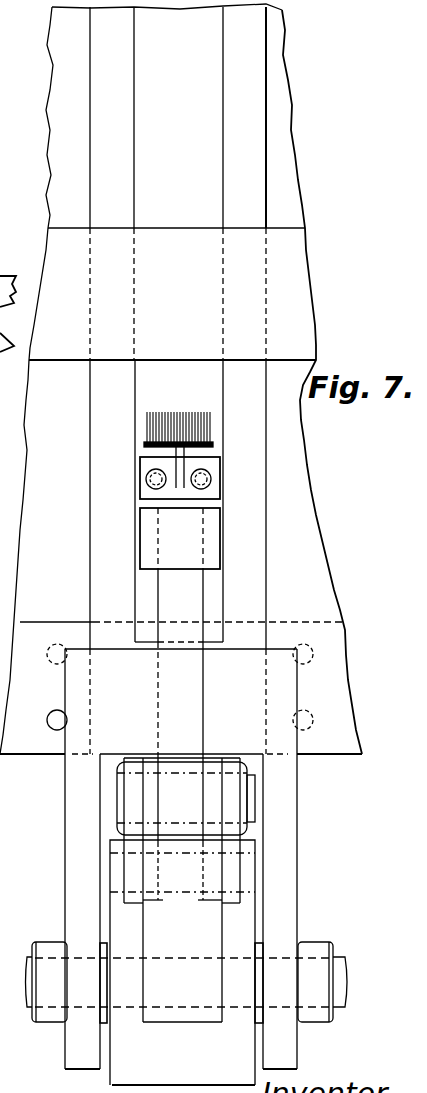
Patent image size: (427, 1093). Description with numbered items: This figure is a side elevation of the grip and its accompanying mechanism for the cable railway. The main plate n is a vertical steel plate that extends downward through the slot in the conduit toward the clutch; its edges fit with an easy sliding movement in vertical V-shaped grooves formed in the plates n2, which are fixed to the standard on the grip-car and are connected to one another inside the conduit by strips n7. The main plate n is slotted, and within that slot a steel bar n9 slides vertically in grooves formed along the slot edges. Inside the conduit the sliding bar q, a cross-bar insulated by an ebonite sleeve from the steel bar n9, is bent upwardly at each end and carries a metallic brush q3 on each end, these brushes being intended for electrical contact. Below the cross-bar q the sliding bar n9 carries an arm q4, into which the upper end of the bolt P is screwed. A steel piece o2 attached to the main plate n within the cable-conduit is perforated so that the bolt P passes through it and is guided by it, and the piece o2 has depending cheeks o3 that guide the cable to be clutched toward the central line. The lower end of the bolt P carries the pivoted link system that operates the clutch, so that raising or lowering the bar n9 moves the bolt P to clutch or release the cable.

The main plate n is at (247, 142).
The plate n2 is at (292, 178).
The strips n7 is at (172, 294).
The steel bar n9 is at (175, 116).
The sliding bar q is at (193, 466).
The metallic brush q3 is at (178, 418).
The arm q4 is at (180, 538).
The bolt P is at (182, 557).
The piece o2 is at (181, 699).
The depending cheeks o3 is at (182, 859).